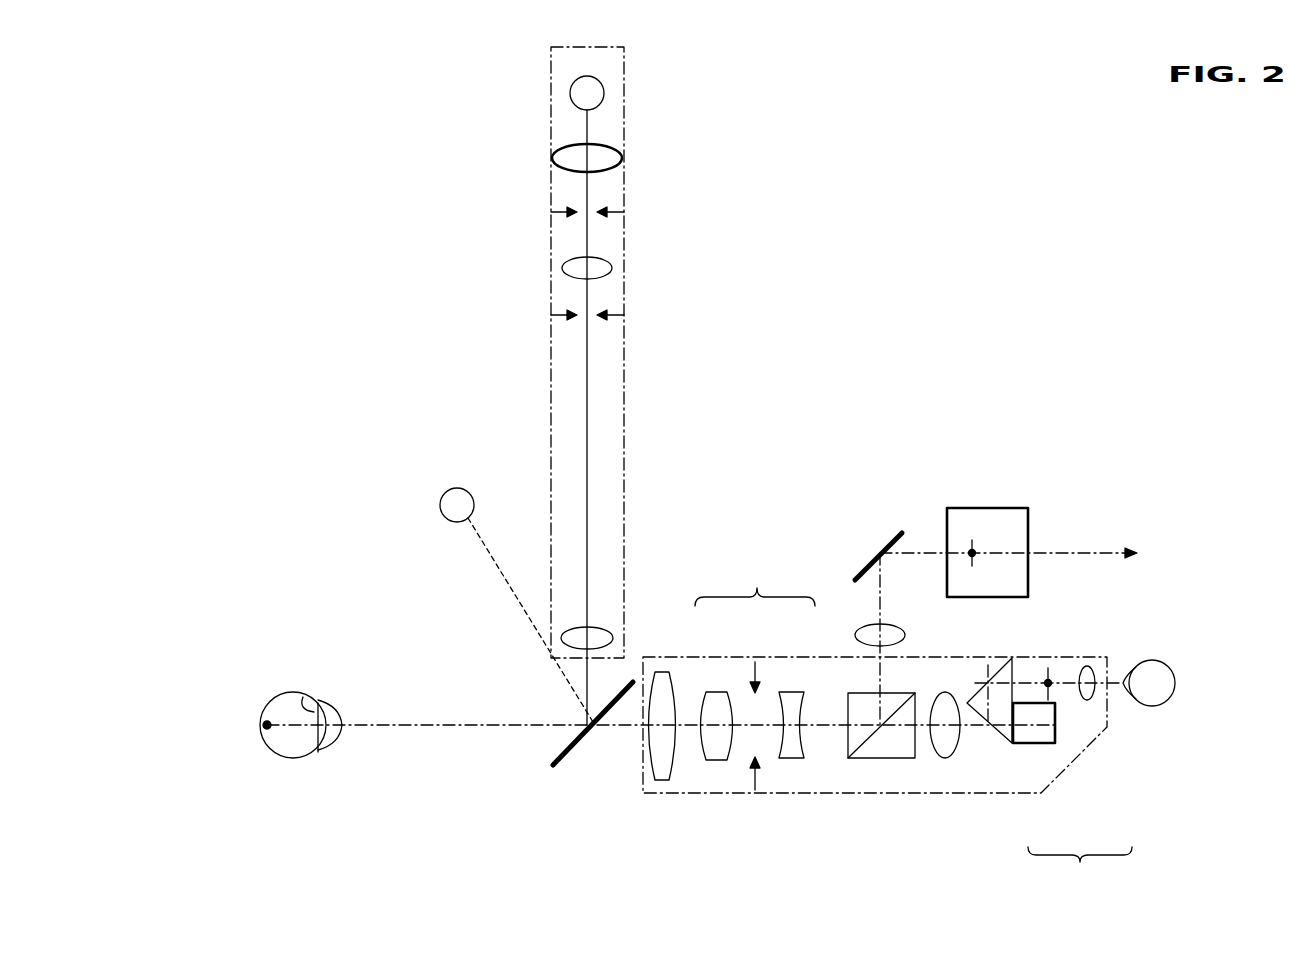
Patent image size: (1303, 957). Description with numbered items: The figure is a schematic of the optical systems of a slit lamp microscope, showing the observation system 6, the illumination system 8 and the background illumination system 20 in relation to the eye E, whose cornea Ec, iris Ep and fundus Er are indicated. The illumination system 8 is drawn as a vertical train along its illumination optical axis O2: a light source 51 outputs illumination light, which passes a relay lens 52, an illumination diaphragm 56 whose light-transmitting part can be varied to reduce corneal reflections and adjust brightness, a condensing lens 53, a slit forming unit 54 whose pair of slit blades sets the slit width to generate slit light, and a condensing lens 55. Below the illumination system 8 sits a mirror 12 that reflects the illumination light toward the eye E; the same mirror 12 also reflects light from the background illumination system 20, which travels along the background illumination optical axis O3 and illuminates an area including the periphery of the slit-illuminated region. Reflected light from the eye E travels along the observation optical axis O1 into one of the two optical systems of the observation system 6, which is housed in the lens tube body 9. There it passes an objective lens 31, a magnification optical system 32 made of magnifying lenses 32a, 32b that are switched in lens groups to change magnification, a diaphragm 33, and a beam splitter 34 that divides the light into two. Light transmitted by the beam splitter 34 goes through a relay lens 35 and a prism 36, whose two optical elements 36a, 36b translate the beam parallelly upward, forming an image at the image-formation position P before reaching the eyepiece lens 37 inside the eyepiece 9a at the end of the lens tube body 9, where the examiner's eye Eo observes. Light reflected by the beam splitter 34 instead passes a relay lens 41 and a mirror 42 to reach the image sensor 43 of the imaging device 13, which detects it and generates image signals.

The illumination system 8 is at (549, 70).
The light source 51 is at (604, 93).
The relay lens 52 is at (618, 156).
The condensing lens 53 is at (604, 268).
The slit forming unit 54 is at (558, 318).
The condensing lens 55 is at (600, 630).
The illumination diaphragm 56 is at (558, 215).
The illumination optical axis O2 is at (590, 440).
The background illumination system 20 is at (455, 490).
The background illumination optical axis O3 is at (501, 574).
The observation optical axis O1 is at (392, 722).
The eye E is at (311, 758).
The iris Ep is at (303, 698).
The cornea Ec is at (342, 730).
The fundus Er is at (266, 724).
The mirror 12 is at (570, 752).
The lens tube body 9 is at (866, 800).
The objective lens 31 is at (672, 762).
The magnification optical system 32 is at (755, 583).
The magnifying lens 32a is at (716, 690).
The magnifying lens 32b is at (792, 690).
The diaphragm 33 is at (758, 770).
The beam splitter 34 is at (900, 760).
The relay lens 35 is at (948, 760).
The prism 36 is at (1080, 871).
The optical element 36a is at (1012, 747).
The optical element 36b is at (1055, 747).
The eyepiece lens 37 is at (1090, 702).
The eyepiece 9a is at (1092, 660).
The observation system 6 is at (1112, 738).
The examiner's eye Eo is at (1150, 660).
The image-formation position P is at (1046, 680).
The relay lens 41 is at (906, 635).
The mirror 42 is at (886, 530).
The image sensor 43 is at (1028, 535).
The imaging device 13 is at (983, 490).